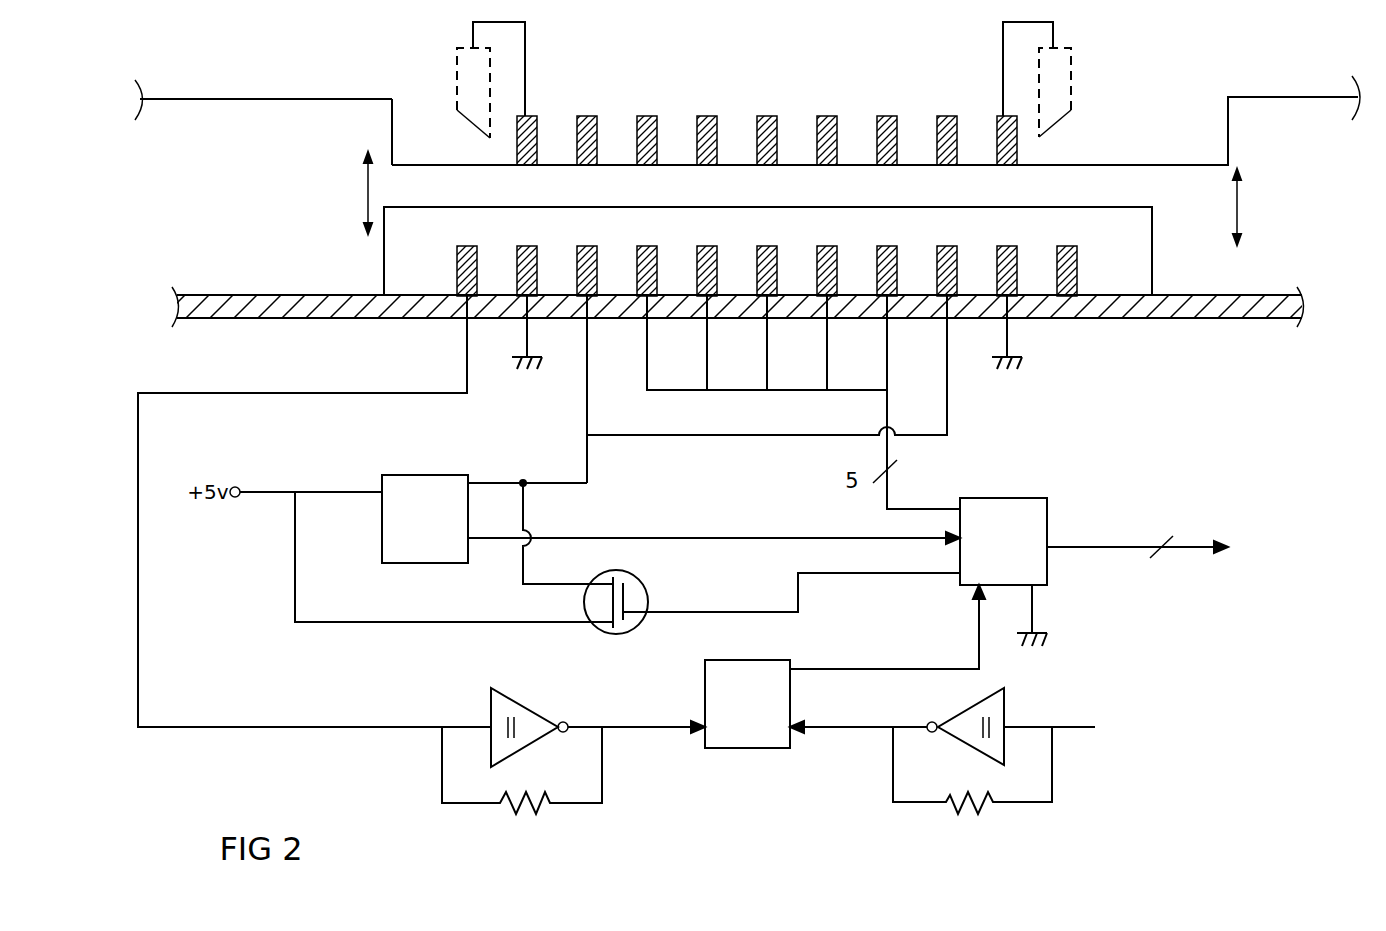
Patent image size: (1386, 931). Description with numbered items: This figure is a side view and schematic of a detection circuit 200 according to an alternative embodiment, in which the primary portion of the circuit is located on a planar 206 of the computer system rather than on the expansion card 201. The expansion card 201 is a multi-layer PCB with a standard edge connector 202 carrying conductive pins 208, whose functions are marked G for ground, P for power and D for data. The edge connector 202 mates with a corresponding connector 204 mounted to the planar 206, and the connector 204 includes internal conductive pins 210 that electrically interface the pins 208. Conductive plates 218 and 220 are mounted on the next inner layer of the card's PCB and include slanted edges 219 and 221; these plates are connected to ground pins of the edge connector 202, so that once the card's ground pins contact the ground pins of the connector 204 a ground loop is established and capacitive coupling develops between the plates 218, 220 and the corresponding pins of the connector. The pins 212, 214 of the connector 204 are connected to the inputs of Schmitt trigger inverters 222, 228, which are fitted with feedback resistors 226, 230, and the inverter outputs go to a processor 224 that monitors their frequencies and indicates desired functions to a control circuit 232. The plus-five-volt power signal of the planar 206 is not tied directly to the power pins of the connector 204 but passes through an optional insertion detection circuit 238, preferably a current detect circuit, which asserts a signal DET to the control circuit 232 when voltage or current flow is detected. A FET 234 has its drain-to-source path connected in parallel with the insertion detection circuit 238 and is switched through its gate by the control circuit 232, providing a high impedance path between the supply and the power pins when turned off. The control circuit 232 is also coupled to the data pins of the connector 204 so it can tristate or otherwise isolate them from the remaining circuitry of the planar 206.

The detection circuit 200 is at (173, 798).
The expansion card 201 is at (242, 100).
The edge connector 202 is at (390, 128).
The connector 204 is at (382, 248).
The planar 206 is at (250, 296).
The conductive pins 208 is at (707, 116).
The internal conductive pins 210 is at (1000, 246).
The pin 212 is at (458, 249).
The pin 214 is at (1077, 248).
The conductive plate 218 is at (457, 55).
The slanted edge 219 is at (468, 123).
The conductive plate 220 is at (1071, 53).
The slanted edge 221 is at (1063, 113).
The Schmitt trigger inverter 222 is at (528, 708).
The processor 224 is at (740, 660).
The feedback resistor 226 is at (543, 795).
The Schmitt trigger inverter 228 is at (957, 712).
The feedback resistor 230 is at (955, 796).
The control circuit 232 is at (1050, 511).
The FET 234 is at (632, 580).
The insertion detection circuit 238 is at (442, 474).